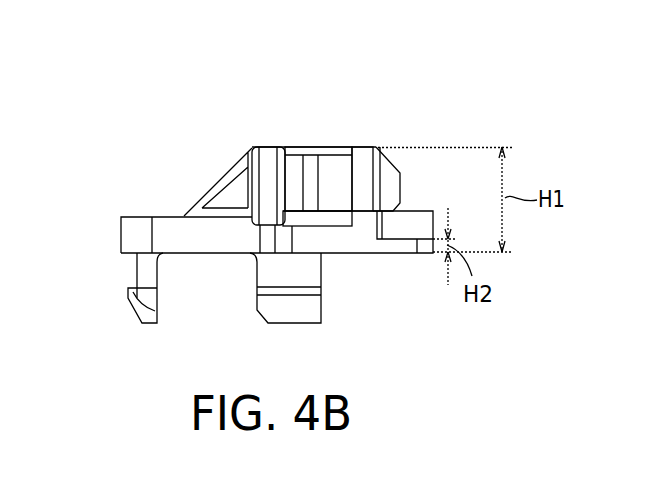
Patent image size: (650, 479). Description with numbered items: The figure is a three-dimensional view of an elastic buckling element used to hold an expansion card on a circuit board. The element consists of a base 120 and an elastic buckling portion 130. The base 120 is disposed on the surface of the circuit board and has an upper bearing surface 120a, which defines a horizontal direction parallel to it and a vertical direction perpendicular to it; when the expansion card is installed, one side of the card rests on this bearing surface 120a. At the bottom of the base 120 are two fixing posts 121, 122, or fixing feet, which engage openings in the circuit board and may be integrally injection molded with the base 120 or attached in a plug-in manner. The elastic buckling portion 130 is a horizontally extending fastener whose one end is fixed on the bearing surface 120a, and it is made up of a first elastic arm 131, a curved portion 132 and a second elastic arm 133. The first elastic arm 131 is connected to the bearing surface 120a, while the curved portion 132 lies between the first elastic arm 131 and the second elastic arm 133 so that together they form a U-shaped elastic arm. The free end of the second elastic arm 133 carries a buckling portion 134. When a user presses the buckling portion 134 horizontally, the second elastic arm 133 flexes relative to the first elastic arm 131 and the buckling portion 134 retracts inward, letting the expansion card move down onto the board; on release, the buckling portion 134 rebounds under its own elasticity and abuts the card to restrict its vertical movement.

The base 120 is at (120, 237).
The bearing surface 120a is at (399, 238).
The fixing post 121 is at (130, 313).
The fixing post 122 is at (293, 308).
The elastic buckling portion 130 is at (336, 128).
The first elastic arm 131 is at (272, 148).
The curved portion 132 is at (318, 148).
The second elastic arm 133 is at (367, 153).
The buckling portion 134 is at (400, 142).